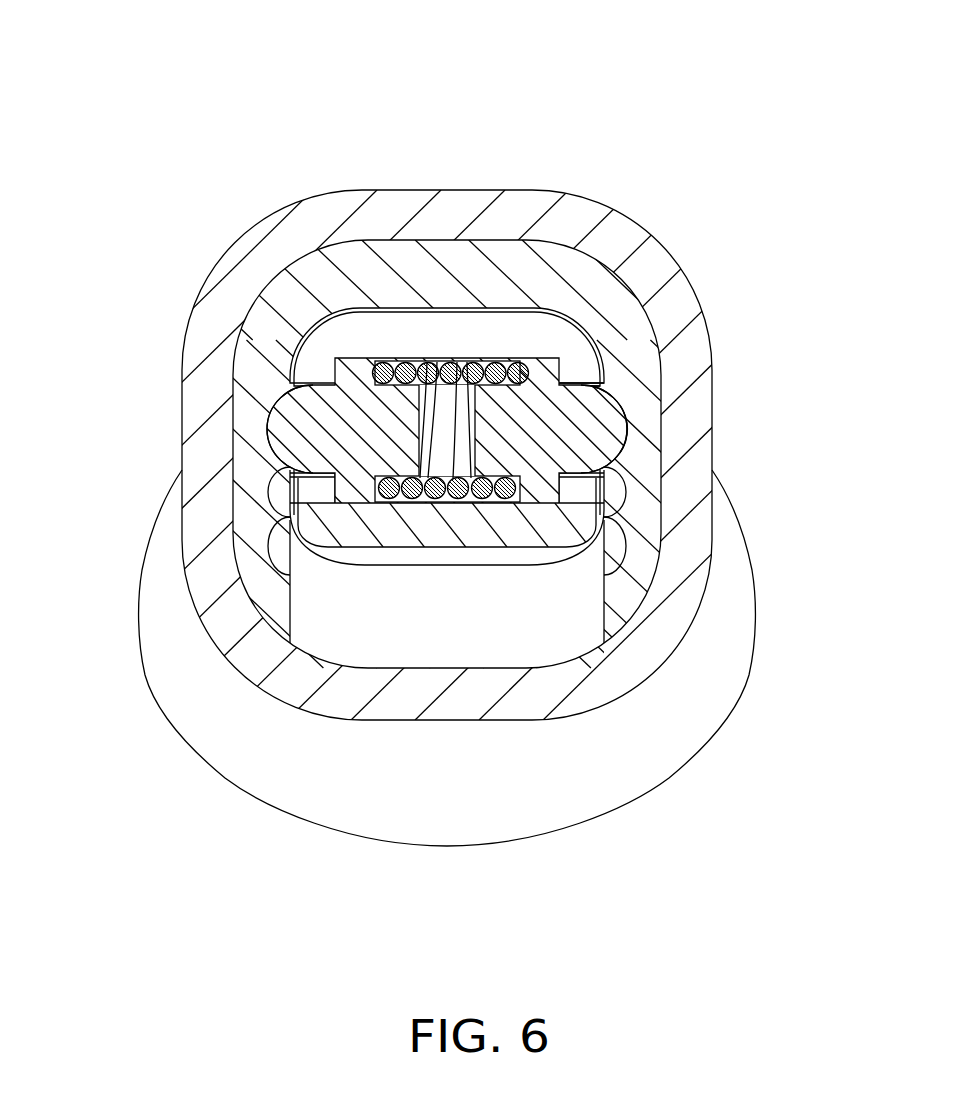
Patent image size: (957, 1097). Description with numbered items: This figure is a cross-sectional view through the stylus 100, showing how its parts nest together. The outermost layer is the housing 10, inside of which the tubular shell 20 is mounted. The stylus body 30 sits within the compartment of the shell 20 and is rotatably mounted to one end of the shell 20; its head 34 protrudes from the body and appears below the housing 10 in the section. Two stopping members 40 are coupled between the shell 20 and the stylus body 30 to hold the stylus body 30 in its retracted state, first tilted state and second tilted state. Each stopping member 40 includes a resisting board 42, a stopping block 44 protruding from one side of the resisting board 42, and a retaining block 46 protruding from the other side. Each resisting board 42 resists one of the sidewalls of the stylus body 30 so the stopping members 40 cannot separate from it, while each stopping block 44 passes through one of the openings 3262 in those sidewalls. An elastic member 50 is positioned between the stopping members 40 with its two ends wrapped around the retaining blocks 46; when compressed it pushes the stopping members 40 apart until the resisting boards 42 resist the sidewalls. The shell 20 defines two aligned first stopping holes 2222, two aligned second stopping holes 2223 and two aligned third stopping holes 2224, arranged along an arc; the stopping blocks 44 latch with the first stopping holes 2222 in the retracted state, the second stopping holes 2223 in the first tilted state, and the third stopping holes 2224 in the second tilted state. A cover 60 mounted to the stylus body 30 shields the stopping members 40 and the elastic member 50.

The stylus 100 is at (307, 58).
The housing 10 is at (290, 240).
The shell 20 is at (297, 302).
The stylus body 30 is at (317, 360).
The head 34 is at (386, 797).
The stopping members 40 is at (310, 432).
The resisting board 42 is at (606, 280).
The stopping block 44 is at (607, 413).
The retaining block 46 is at (496, 433).
The elastic member 50 is at (383, 365).
The cover 60 is at (355, 527).
The first stopping holes 2222 is at (627, 430).
The second stopping holes 2223 is at (627, 487).
The third stopping holes 2224 is at (627, 538).
The openings 3262 is at (603, 373).